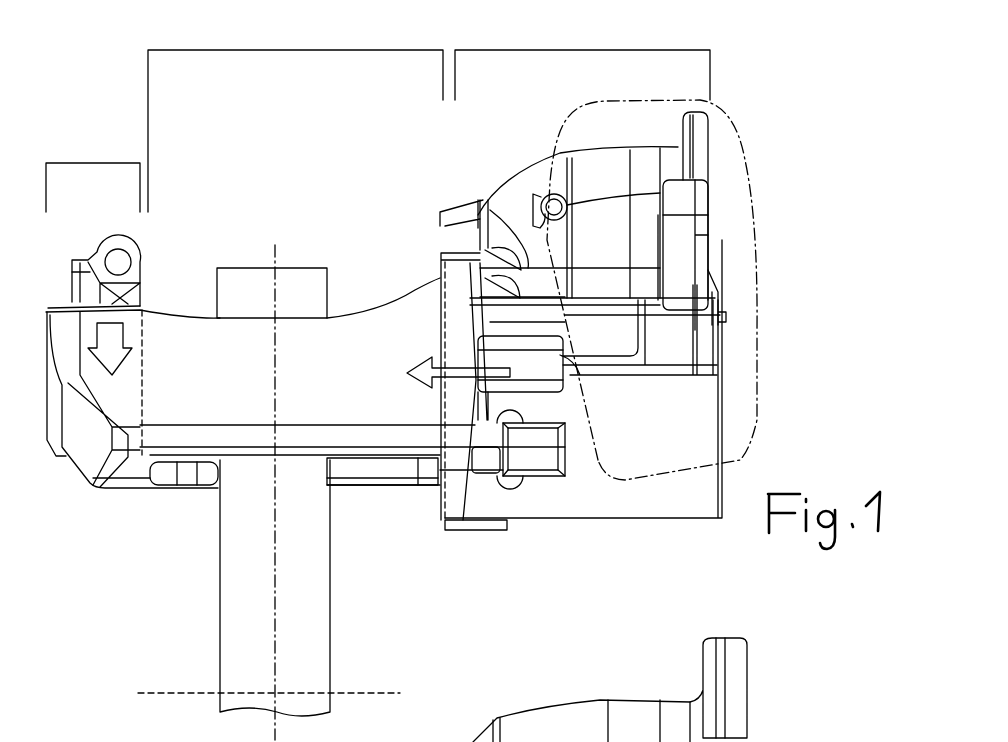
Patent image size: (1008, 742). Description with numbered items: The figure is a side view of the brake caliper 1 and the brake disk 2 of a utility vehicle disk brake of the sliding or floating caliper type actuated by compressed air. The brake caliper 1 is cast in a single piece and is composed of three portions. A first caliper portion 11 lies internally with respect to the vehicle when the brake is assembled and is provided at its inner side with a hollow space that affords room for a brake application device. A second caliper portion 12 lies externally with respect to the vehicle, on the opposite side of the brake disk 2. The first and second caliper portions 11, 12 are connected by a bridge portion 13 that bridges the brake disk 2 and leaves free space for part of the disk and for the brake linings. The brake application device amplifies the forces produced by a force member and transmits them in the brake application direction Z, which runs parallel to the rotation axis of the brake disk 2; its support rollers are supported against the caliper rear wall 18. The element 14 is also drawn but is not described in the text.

The brake caliper 1 is at (496, 184).
The brake disk 2 is at (233, 640).
The first caliper portion 11 is at (575, 50).
The second caliper portion 12 is at (90, 163).
The bridge portion 13 is at (296, 50).
The brake caliper 14 is at (663, 690).
The caliper rear wall 18 is at (708, 350).
The brake application direction Z is at (458, 500).